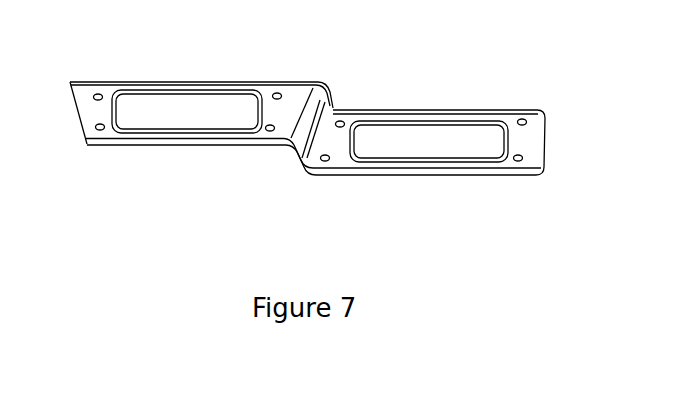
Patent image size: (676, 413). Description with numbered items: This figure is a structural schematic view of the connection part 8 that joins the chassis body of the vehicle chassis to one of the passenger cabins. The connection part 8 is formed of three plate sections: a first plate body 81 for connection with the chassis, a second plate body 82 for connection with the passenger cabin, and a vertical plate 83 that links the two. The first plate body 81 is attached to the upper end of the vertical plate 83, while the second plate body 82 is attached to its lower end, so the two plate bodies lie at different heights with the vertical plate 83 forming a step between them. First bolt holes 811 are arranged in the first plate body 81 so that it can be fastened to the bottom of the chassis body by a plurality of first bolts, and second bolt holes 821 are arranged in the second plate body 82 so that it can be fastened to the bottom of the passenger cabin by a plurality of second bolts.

The connection part 8 is at (366, 221).
The first plate body 81 is at (256, 138).
The first bolt holes 811 is at (272, 93).
The second plate body 82 is at (364, 166).
The second bolt holes 821 is at (337, 121).
The vertical plate 83 is at (300, 150).